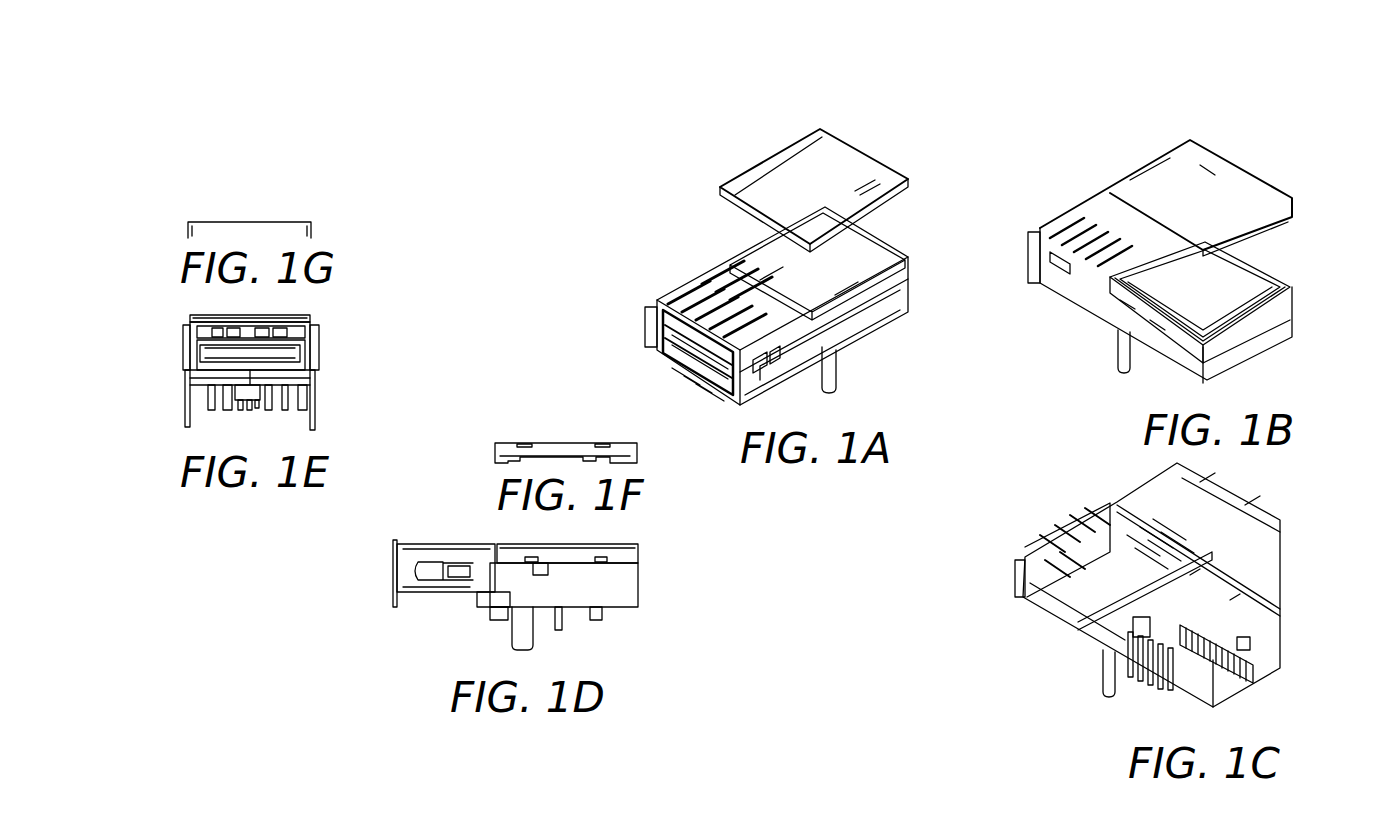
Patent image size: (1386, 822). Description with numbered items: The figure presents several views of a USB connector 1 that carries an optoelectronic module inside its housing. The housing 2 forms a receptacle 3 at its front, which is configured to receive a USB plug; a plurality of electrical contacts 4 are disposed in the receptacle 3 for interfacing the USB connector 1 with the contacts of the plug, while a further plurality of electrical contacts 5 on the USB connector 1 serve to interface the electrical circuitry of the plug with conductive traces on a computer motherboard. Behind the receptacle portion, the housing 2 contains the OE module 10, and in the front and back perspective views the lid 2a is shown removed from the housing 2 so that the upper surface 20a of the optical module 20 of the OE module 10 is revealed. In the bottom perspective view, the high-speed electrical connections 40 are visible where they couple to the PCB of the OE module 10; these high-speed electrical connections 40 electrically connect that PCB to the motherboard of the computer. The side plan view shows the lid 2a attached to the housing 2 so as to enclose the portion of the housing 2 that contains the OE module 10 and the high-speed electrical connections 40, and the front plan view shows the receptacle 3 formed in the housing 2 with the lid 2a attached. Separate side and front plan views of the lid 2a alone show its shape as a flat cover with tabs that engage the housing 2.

In FIG. 1E, the USB connector 1 is at (146, 325).
In FIG. 1D, the USB connector 1 is at (448, 529).
In FIG. 1A, the USB connector 1 is at (858, 70).
In FIG. 1B, the USB connector 1 is at (1180, 96).
In FIG. 1C, the USB connector 1 is at (1263, 462).
In FIG. 1E, the housing 2 is at (320, 348).
In FIG. 1D, the housing 2 is at (630, 586).
In FIG. 1A, the housing 2 is at (880, 314).
In FIG. 1B, the housing 2 is at (1126, 328).
In FIG. 1C, the housing 2 is at (1126, 520).
In FIG. 1G, the lid 2a is at (293, 222).
In FIG. 1E, the lid 2a is at (304, 317).
In FIG. 1F, the lid 2a is at (545, 443).
In FIG. 1D, the lid 2a is at (628, 552).
In FIG. 1A, the lid 2a is at (850, 178).
In FIG. 1B, the lid 2a is at (1222, 190).
In FIG. 1C, the lid 2a is at (1278, 522).
In FIG. 1E, the receptacle 3 is at (192, 332).
In FIG. 1D, the receptacle 3 is at (393, 573).
In FIG. 1A, the receptacle 3 is at (628, 326).
In FIG. 1C, the receptacle 3 is at (1040, 527).
In FIG. 1E, the electrical contacts 4 is at (272, 352).
In FIG. 1A, the electrical contacts 4 is at (697, 361).
In FIG. 1E, the electrical contacts 5 is at (236, 406).
In FIG. 1D, the electrical contacts 5 is at (536, 626).
In FIG. 1A, the electrical contacts 5 is at (716, 400).
In FIG. 1C, the electrical contacts 5 is at (1163, 656).
In FIG. 1C, the OE module 10 is at (1260, 672).
In FIG. 1A, the optical module 20 is at (878, 256).
In FIG. 1B, the optical module 20 is at (1262, 276).
In FIG. 1C, the optical module 20 is at (1273, 601).
In FIG. 1A, the upper surface of the optical module 20a is at (766, 266).
In FIG. 1B, the upper surface of the optical module 20a is at (1205, 276).
In FIG. 1D, the high-speed electrical connections 40 is at (602, 619).
In FIG. 1C, the high-speed electrical connections 40 is at (1237, 643).